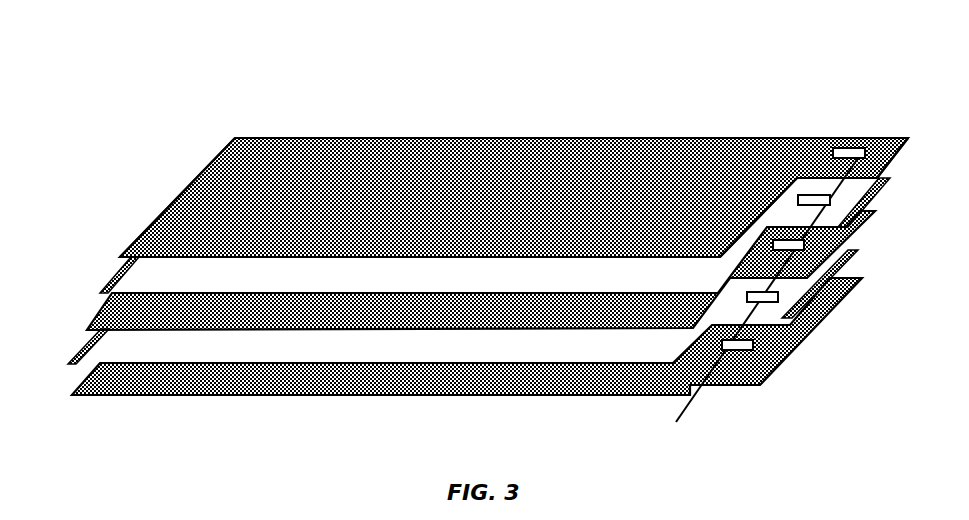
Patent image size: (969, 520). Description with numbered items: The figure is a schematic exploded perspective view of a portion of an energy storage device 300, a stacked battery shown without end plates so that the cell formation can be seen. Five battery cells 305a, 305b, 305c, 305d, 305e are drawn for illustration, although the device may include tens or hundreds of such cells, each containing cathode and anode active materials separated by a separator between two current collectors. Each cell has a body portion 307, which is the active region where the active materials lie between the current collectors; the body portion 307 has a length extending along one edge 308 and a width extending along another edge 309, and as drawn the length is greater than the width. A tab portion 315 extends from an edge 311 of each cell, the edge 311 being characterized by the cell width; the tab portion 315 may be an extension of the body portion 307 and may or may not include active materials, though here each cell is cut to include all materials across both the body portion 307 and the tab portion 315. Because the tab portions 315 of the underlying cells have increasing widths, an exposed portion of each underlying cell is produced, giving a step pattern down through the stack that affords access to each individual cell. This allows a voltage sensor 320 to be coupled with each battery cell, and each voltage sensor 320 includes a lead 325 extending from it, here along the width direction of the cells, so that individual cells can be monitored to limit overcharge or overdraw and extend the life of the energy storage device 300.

The energy storage device 300 is at (176, 82).
The battery cell 305a is at (183, 192).
The battery cell 305b is at (122, 268).
The battery cell 305c is at (90, 322).
The battery cell 305d is at (117, 367).
The battery cell 305e is at (248, 396).
The body portion 307 is at (478, 137).
The edge 308 is at (290, 137).
The edge 309 is at (213, 158).
The edge 311 is at (782, 190).
The tab portion 315 is at (877, 140).
The voltage sensor 320 is at (755, 350).
The lead 325 is at (690, 410).